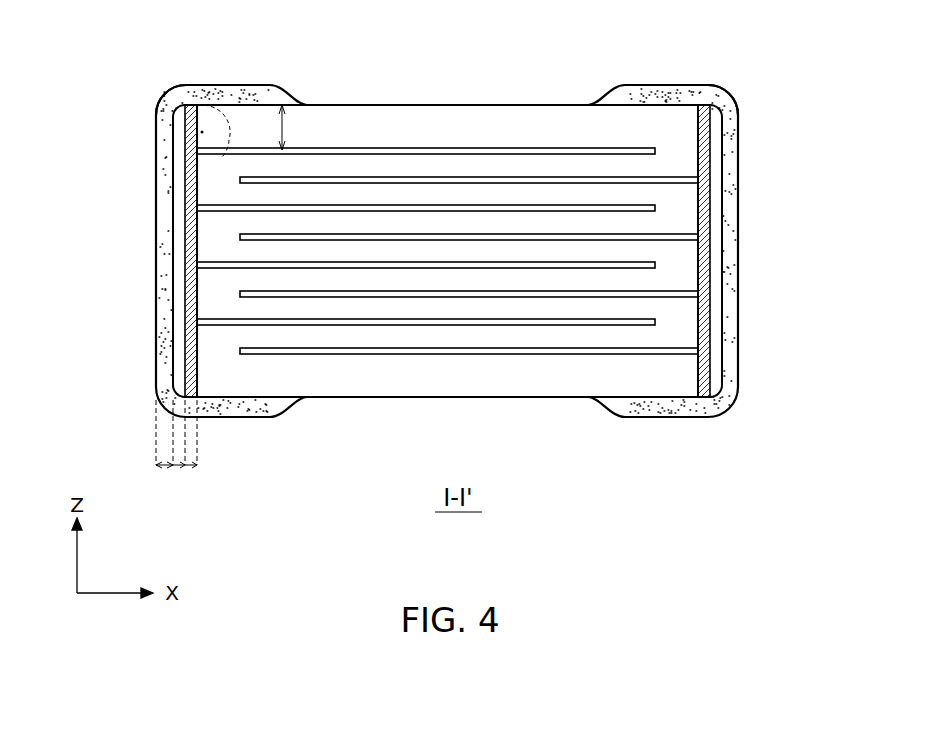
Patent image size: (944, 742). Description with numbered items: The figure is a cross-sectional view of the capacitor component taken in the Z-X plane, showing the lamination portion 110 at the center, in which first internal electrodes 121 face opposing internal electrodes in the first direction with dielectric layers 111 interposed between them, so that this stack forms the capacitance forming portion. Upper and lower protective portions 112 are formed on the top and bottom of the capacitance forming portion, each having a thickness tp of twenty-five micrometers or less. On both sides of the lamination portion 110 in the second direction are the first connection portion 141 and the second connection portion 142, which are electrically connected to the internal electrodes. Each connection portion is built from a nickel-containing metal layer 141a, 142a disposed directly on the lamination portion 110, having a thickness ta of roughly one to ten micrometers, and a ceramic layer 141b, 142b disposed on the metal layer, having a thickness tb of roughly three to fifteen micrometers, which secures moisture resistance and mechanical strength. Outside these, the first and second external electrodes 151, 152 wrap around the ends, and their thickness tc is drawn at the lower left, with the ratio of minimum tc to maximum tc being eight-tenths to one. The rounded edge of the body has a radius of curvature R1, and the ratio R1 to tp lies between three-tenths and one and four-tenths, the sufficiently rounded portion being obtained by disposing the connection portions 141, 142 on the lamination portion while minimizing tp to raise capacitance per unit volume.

The lamination portion 110 is at (386, 105).
The dielectric layer 111 is at (507, 170).
The protective portion 112 is at (437, 125).
The first internal electrode 121 is at (476, 150).
The first connection portion 141 is at (166, 251).
The metal layer 141a is at (179, 196).
The ceramic layer 141b is at (77, 180).
The second connection portion 142 is at (729, 251).
The metal layer 142a is at (716, 197).
The ceramic layer 142b is at (818, 180).
The first external electrode 151 is at (199, 97).
The second external electrode 152 is at (668, 100).
The radius of curvature of the edge of the body R1 is at (228, 100).
The thickness of protective portion tp is at (284, 127).
The thickness of metal layer ta is at (190, 468).
The thickness of ceramic layer tb is at (183, 468).
The thickness of external electrode tc is at (163, 468).